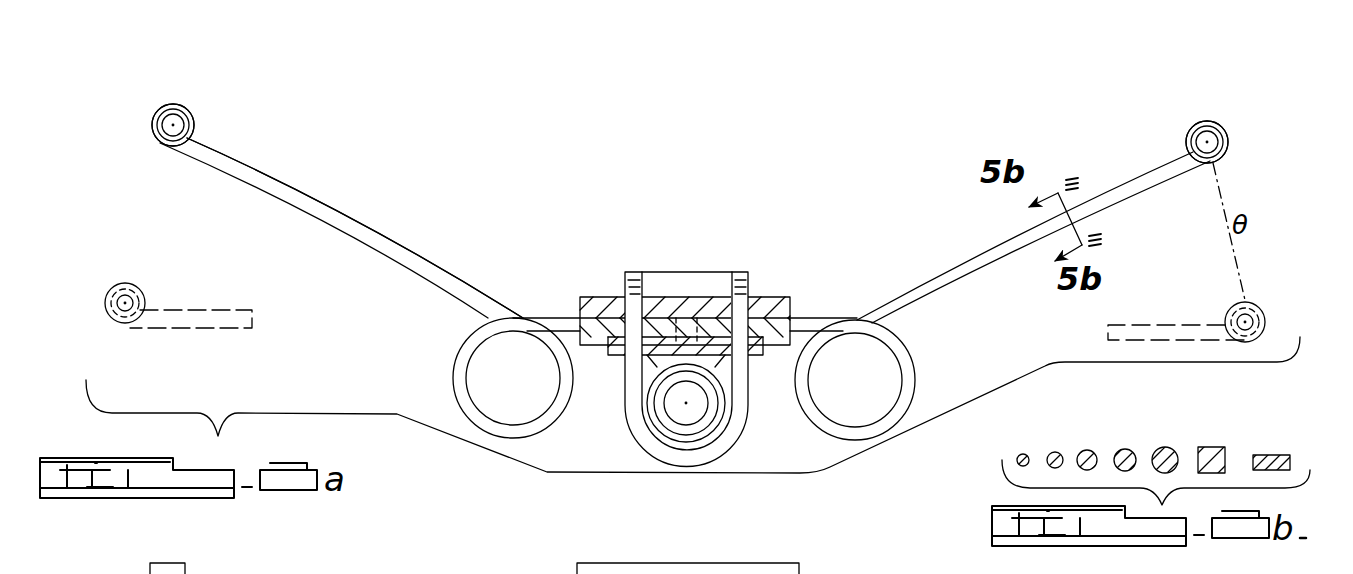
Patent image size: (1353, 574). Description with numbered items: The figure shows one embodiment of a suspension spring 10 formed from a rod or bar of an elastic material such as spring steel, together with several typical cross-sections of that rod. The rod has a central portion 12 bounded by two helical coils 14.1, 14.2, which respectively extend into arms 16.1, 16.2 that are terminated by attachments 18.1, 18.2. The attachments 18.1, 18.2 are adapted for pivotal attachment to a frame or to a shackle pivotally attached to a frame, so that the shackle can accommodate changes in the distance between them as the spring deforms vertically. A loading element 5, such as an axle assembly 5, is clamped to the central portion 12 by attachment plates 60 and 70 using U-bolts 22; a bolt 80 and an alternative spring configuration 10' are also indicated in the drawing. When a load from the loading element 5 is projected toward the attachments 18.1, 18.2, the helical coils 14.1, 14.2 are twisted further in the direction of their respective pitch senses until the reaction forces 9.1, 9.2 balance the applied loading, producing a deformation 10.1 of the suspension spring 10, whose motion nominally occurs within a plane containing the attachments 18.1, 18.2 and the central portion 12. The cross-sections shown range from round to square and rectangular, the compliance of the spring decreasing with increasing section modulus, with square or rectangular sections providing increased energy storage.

The loading element 5 is at (656, 407).
The reaction force 9.1 is at (181, 90).
The reaction force 9.2 is at (1217, 98).
The suspension spring 10 is at (355, 193).
The deformation 10.1 is at (161, 282).
The alternative spring assembly 10' is at (203, 545).
The central portion 12 is at (560, 316).
The helical coil 14.1 is at (453, 378).
The helical coil 14.2 is at (916, 372).
The arm 16.1 is at (312, 208).
The arm 16.2 is at (925, 290).
The attachment 18.1 is at (158, 107).
The attachment 18.2 is at (1196, 126).
The U-bolt 22 is at (754, 430).
The attachment plate 60 is at (804, 362).
The attachment plate 70 is at (578, 296).
The fastening bolt 80 is at (681, 296).